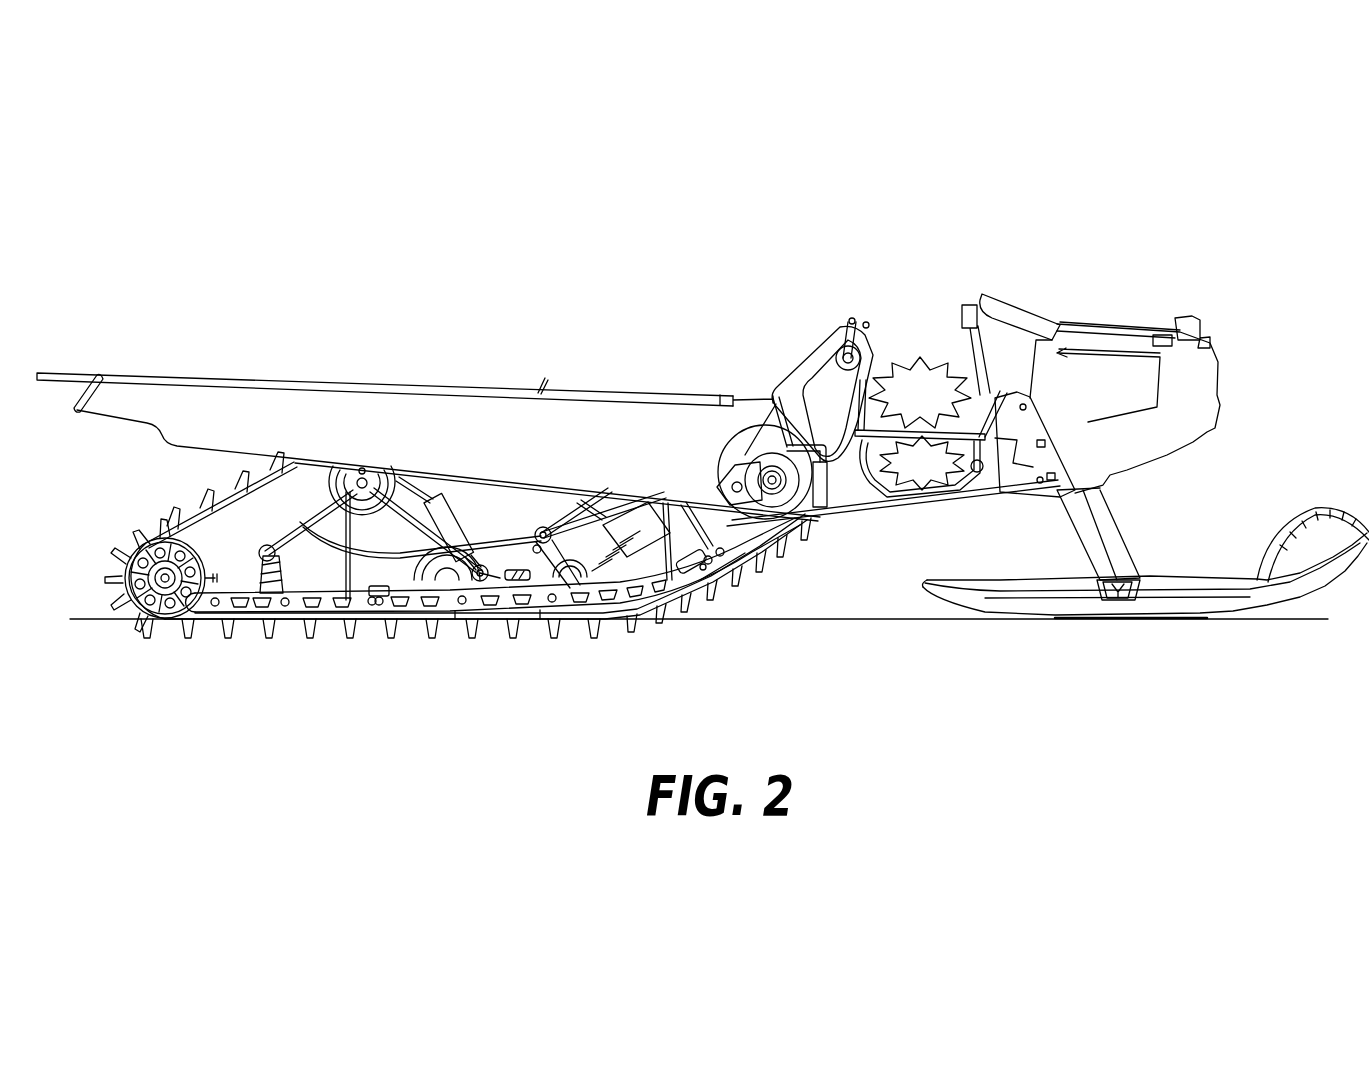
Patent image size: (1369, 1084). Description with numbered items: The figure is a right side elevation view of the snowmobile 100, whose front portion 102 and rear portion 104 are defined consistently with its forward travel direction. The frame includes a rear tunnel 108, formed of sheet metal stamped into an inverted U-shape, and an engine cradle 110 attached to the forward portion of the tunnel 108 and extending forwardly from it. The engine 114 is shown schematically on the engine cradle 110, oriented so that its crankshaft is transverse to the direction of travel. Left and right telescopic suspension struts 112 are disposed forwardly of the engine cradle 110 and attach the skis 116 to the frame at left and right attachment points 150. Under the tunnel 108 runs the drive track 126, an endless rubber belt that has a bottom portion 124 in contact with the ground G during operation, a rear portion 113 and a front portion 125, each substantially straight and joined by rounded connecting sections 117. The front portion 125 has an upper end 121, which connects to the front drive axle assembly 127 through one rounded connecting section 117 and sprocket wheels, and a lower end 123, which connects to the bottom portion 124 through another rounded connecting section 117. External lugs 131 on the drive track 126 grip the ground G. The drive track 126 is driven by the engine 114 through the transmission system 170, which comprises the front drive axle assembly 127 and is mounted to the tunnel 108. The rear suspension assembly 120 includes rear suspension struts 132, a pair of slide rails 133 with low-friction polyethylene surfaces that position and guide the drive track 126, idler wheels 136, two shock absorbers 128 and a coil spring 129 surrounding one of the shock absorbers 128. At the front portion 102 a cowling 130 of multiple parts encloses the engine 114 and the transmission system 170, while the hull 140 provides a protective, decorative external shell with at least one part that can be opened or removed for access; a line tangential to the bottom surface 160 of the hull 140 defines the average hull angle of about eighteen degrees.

The snowmobile 100 is at (893, 262).
The front portion 102 is at (1213, 293).
The rear portion 104 is at (304, 343).
The rear tunnel 108 is at (415, 408).
The engine cradle 110 is at (931, 427).
The telescopic suspension struts 112 is at (1115, 540).
The rear portion of drive track 113 is at (442, 562).
The engine 114 is at (922, 463).
The skis 116 is at (1205, 590).
The rounded connecting sections 117 is at (132, 608).
The rear suspension assembly 120 is at (283, 522).
The upper end of front portion 121 is at (778, 550).
The lower end of front portion 123 is at (740, 572).
The bottom portion of drive track 124 is at (490, 632).
The front portion of drive track 125 is at (752, 572).
The drive track 126 is at (545, 648).
The front drive axle assembly 127 is at (748, 468).
The shock absorbers 128 is at (440, 496).
The coil spring 129 is at (593, 557).
The cowling 130 is at (1122, 340).
The external lugs 131 is at (273, 630).
The rear suspension struts 132 is at (567, 526).
The slide rails 133 is at (372, 604).
The idler wheels 136 is at (181, 608).
The hull 140 is at (1233, 352).
The attachment points 150 is at (1118, 592).
The bottom surface of hull 160 is at (1160, 457).
The transmission system 170 is at (803, 353).
The ground G is at (1297, 622).